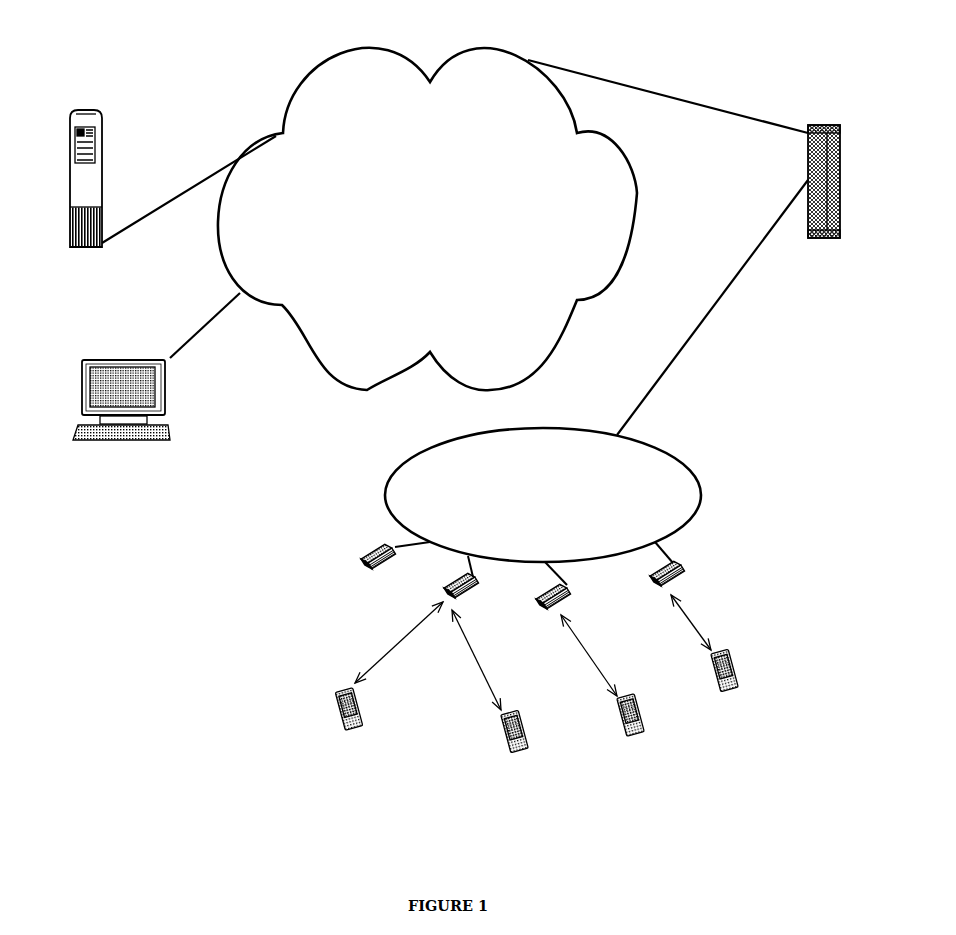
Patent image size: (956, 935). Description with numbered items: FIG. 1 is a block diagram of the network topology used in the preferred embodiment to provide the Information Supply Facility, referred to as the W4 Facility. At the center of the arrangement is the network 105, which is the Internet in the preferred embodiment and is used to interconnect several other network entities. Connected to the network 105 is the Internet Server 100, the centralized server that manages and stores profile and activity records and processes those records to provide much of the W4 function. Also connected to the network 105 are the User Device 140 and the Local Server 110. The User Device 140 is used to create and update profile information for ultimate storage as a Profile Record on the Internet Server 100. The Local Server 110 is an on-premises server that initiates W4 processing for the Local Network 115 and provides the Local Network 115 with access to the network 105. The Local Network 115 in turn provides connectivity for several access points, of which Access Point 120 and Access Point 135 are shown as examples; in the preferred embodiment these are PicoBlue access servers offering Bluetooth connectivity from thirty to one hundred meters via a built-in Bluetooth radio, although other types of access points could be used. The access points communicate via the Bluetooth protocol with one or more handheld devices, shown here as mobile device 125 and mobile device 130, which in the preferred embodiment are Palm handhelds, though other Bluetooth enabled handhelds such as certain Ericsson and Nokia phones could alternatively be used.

The Internet Server 100 is at (102, 142).
The network 105 is at (430, 80).
The Local Server 110 is at (823, 128).
The Local Network 115 is at (702, 492).
The Access Point 120 is at (683, 571).
The mobile device 125 is at (736, 667).
The mobile device 130 is at (645, 727).
The Access Point 135 is at (568, 592).
The User Device 140 is at (122, 410).